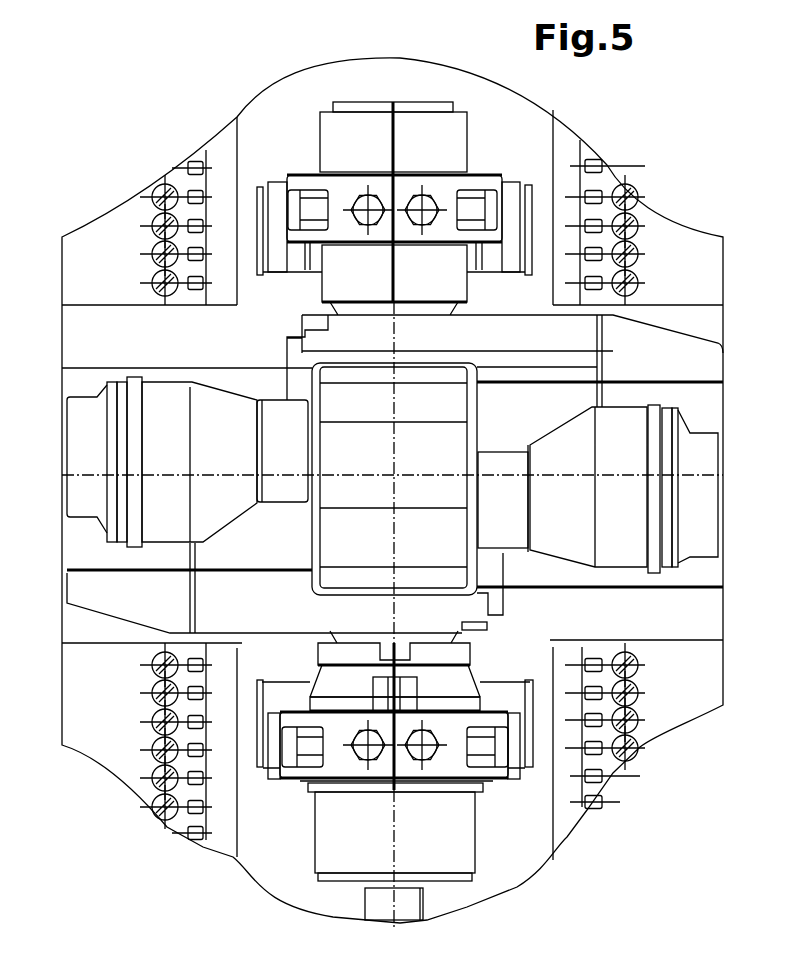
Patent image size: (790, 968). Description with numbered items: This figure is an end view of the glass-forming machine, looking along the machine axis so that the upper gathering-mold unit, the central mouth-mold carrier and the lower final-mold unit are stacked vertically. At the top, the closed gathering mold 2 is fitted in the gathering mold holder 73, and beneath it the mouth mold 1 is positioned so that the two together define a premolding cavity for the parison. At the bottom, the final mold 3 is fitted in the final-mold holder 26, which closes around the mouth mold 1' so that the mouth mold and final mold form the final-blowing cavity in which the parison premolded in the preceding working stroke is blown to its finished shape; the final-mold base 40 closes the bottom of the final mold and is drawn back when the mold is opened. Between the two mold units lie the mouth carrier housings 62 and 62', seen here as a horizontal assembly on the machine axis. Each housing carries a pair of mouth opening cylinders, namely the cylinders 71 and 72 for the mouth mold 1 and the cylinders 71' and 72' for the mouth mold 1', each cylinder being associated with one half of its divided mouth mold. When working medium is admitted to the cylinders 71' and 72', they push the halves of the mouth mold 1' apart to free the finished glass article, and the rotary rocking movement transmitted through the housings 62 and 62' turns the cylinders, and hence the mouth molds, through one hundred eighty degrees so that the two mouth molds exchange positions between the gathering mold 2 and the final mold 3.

The mouth mold 1 is at (505, 435).
The mouth mold 1' is at (479, 607).
The gathering mold 2 is at (350, 125).
The final mold 3 is at (457, 847).
The final-mold holder 26 is at (505, 773).
The final-mold base 40 is at (500, 885).
The mouth carrier housing 62 is at (588, 520).
The mouth carrier housing 62' is at (199, 473).
The mouth opening cylinder 71 is at (508, 452).
The mouth opening cylinder 71' is at (276, 414).
The mouth opening cylinder 72 is at (683, 483).
The mouth opening cylinder 72' is at (104, 471).
The gathering mold holder 73 is at (297, 181).